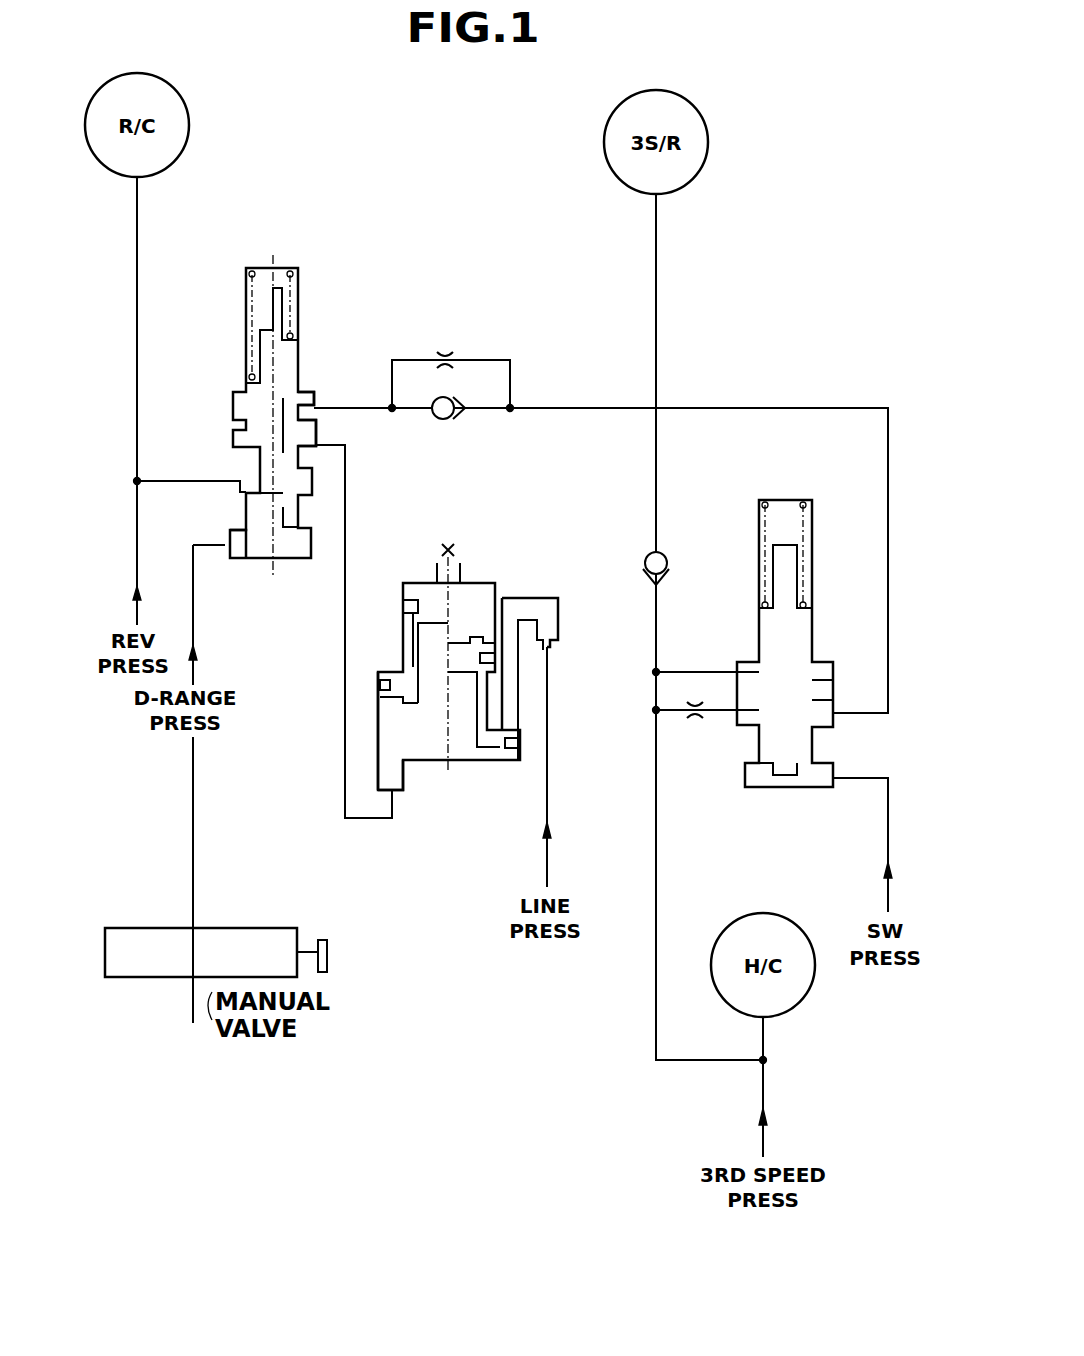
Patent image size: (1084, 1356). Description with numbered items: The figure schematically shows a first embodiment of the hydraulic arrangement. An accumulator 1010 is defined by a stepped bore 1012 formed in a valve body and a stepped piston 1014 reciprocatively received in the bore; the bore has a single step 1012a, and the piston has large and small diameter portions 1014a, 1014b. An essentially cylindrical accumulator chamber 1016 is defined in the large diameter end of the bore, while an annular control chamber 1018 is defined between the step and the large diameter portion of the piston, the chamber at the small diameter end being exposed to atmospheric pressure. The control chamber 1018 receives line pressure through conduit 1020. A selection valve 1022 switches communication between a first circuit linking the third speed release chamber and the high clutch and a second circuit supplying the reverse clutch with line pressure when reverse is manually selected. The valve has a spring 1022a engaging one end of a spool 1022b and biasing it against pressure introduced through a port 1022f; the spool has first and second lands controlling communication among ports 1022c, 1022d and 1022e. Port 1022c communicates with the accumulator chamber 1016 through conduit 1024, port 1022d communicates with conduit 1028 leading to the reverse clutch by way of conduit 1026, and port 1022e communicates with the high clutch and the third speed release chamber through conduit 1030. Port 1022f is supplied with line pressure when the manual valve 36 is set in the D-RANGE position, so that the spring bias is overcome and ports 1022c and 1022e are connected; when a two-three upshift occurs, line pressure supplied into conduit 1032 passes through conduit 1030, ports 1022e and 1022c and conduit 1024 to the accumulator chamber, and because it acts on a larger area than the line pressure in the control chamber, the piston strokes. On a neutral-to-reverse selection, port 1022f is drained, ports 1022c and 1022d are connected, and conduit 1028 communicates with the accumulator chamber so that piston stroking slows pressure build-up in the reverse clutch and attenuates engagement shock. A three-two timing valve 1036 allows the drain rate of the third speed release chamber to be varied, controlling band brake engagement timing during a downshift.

The manual valve 36 is at (158, 978).
The accumulator 1010 is at (444, 674).
The stepped bore 1012 is at (383, 728).
The step 1012a is at (380, 675).
The stepped piston 1014 is at (413, 640).
The port 1014a is at (403, 605).
The land 1014b is at (380, 695).
The accumulator chamber 1016 is at (425, 750).
The control chamber 1018 is at (510, 695).
The conduit 1020 is at (548, 757).
The selection valve 1022 is at (286, 402).
The spring 1022a is at (296, 285).
The spool 1022b is at (298, 345).
The port 1022c is at (310, 440).
The port 1022d is at (240, 490).
The port 1022e is at (300, 397).
The port 1022f is at (230, 562).
The conduit 1024 is at (346, 497).
The conduit 1026 is at (180, 480).
The conduit 1028 is at (137, 376).
The conduit 1030 is at (561, 407).
The conduit 1032 is at (657, 832).
The 3-2 timing valve 1036 is at (818, 575).